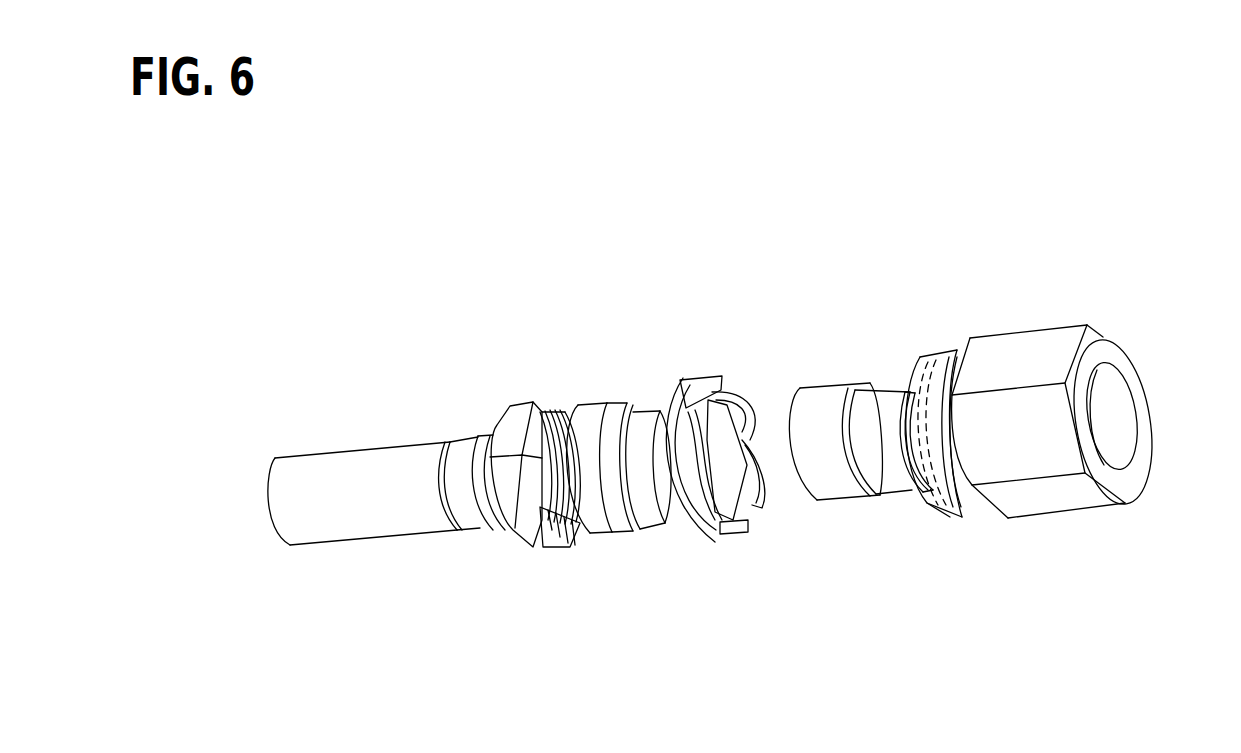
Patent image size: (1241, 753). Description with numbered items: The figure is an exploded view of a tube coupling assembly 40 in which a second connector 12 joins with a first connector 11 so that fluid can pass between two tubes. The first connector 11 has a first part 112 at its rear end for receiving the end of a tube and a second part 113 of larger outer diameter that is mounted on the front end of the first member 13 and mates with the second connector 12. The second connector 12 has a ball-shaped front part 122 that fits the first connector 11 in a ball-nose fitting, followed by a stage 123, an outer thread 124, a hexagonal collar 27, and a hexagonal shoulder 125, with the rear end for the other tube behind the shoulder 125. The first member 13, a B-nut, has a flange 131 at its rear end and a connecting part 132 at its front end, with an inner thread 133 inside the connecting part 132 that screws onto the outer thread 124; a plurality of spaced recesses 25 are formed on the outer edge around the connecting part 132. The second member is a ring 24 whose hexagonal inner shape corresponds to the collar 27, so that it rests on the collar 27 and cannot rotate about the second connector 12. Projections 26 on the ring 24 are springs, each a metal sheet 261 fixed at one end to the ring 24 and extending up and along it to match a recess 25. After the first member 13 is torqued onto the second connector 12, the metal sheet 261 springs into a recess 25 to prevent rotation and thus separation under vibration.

The tube coupling assembly 40 is at (268, 330).
The second connector 12 is at (598, 386).
The shoulder 125 is at (512, 423).
The outer thread 124 is at (556, 412).
The collar 27 is at (543, 540).
The stage 123 is at (610, 515).
The front part 122 is at (660, 510).
The ring 24 is at (680, 398).
The projection 26 is at (712, 535).
The metal sheet 261 is at (767, 503).
The second part 113 is at (826, 400).
The first connector 11 is at (842, 386).
The first part 112 is at (885, 398).
The recess 25 is at (915, 480).
The connecting part 132 is at (950, 493).
The inner thread 133 is at (948, 500).
The first member 13 is at (1017, 347).
The flange 131 is at (955, 418).